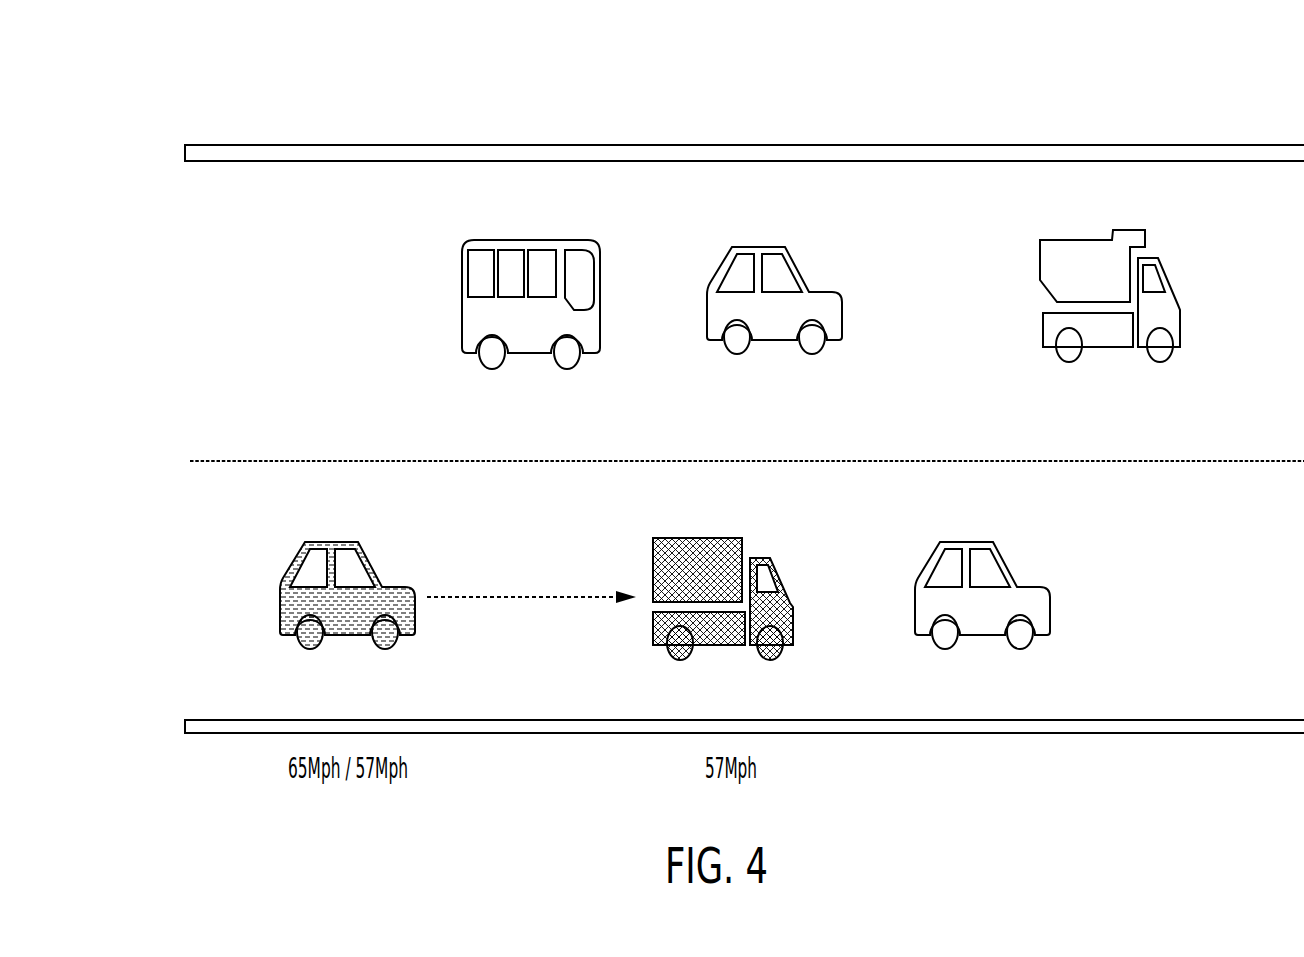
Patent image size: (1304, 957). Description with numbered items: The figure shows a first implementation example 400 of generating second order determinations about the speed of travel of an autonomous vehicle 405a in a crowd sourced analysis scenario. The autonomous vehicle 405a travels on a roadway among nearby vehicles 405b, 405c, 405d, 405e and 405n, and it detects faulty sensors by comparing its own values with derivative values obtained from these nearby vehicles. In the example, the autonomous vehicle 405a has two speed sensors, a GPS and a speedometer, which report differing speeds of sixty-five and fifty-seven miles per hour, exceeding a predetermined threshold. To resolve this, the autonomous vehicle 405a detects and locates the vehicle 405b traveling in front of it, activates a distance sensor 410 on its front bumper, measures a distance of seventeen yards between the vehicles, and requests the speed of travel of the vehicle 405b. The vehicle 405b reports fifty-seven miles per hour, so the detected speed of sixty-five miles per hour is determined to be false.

The first implementation example 400 is at (148, 113).
The autonomous vehicle 405a is at (283, 572).
The vehicle 405b is at (708, 537).
The nearby vehicle 405c is at (963, 541).
The nearby vehicle 405d is at (537, 239).
The nearby vehicle 405e is at (761, 247).
The nearby vehicle 405n is at (1082, 239).
The distance sensor 410 is at (417, 630).